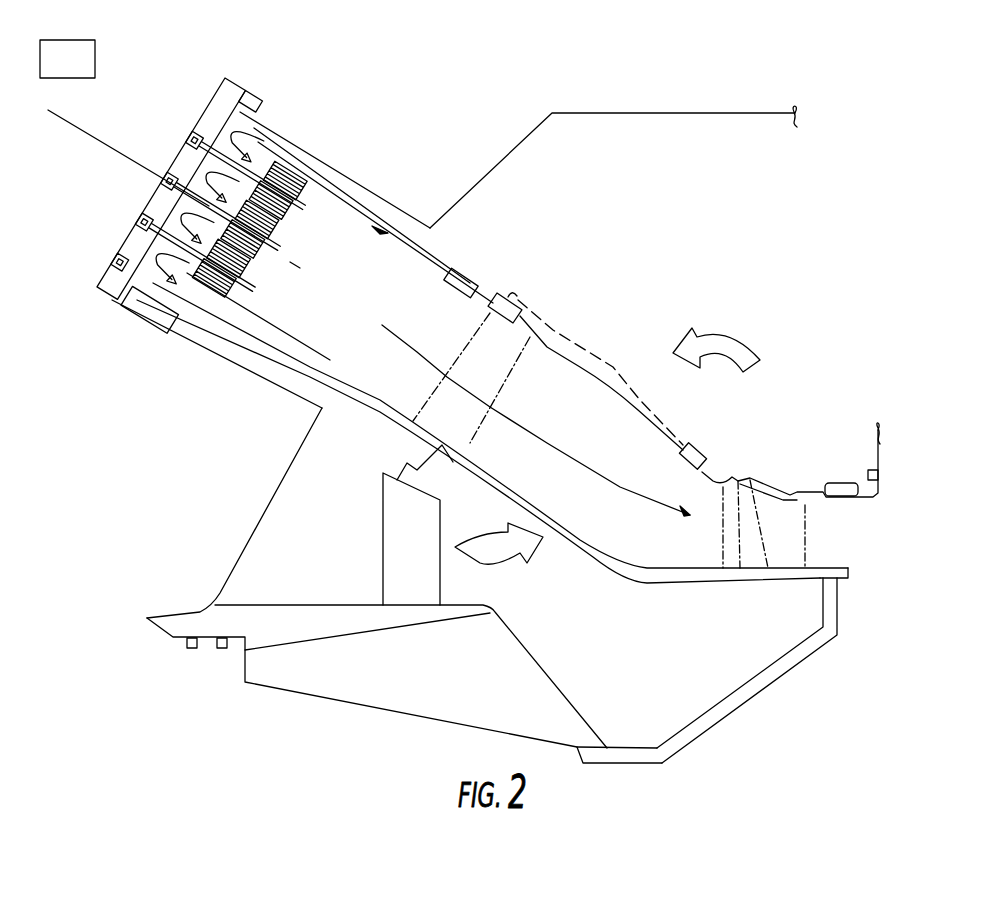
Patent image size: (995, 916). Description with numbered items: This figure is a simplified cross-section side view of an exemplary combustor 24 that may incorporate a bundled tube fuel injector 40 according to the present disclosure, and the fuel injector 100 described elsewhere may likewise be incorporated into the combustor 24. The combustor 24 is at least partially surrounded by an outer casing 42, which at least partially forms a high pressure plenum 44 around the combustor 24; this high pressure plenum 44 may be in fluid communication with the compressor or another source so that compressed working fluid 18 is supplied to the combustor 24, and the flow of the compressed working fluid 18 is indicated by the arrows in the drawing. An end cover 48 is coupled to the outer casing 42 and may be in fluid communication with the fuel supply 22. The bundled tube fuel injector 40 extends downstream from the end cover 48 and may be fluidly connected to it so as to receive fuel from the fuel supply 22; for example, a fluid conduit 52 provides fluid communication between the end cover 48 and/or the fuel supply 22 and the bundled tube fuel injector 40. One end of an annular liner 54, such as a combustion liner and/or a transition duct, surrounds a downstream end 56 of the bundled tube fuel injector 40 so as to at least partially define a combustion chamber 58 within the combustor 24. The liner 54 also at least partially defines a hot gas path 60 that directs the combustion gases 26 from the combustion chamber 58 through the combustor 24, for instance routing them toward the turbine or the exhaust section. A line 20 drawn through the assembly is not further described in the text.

The compressed working fluid 18 is at (218, 132).
The engine centerline axis 20 is at (74, 126).
The fuel supply 22 is at (70, 100).
The combustor 24 is at (406, 64).
The combustion gases 26 is at (527, 433).
The bundled tube fuel injector 40 is at (258, 272).
The outer casing 42 is at (480, 176).
The high pressure plenum 44 is at (716, 221).
The end cover 48 is at (218, 98).
The fluid conduit 52 is at (207, 205).
The annular liner 54 is at (455, 268).
The downstream end 56 is at (298, 262).
The combustion chamber 58 is at (380, 288).
The hot gas path 60 is at (417, 347).
The bundled tube fuel injector 100 is at (253, 293).